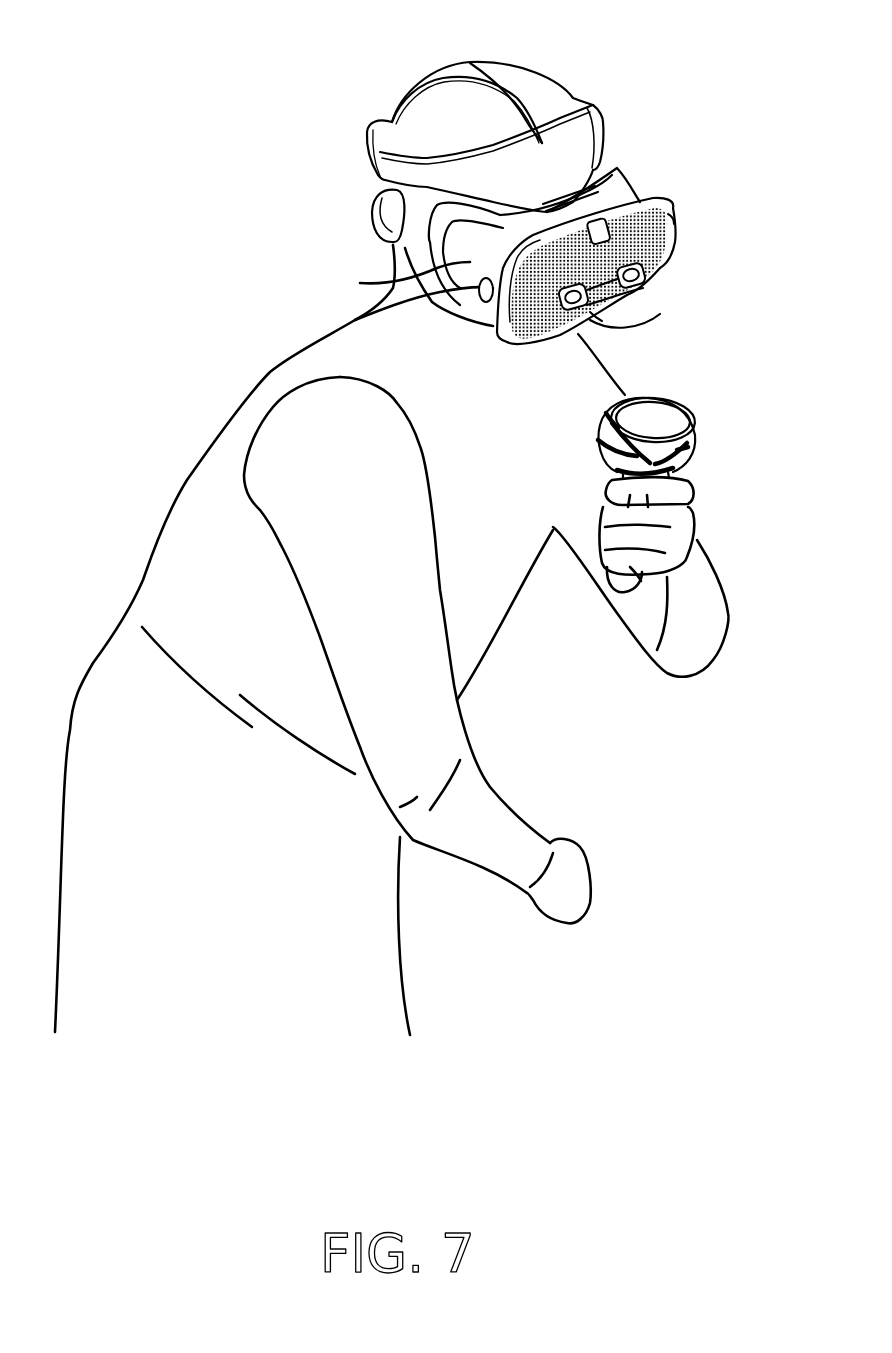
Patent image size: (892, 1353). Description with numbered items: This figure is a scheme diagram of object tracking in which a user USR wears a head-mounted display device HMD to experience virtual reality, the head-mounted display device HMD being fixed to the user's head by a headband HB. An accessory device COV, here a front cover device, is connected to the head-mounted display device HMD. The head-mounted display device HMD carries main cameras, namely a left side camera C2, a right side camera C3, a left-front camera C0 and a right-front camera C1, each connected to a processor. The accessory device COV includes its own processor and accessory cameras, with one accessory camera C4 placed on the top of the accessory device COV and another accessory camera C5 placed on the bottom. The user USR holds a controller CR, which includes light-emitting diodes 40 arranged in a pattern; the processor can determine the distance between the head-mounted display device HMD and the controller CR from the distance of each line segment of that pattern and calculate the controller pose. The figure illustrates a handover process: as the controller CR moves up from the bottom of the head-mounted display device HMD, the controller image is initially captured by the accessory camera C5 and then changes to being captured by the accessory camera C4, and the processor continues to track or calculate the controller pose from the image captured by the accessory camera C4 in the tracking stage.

The user USR is at (313, 342).
The head-mounted display device HMD is at (617, 177).
The headband HB is at (465, 70).
The accessory device COV is at (673, 248).
The left-front camera C0 is at (667, 270).
The right-front camera C1 is at (632, 292).
The left side camera C2 is at (675, 222).
The right side camera C3 is at (490, 293).
The accessory camera C4 is at (603, 227).
The accessory camera C5 is at (595, 317).
The controller CR is at (673, 402).
The light-emitting diodes 40 is at (697, 450).